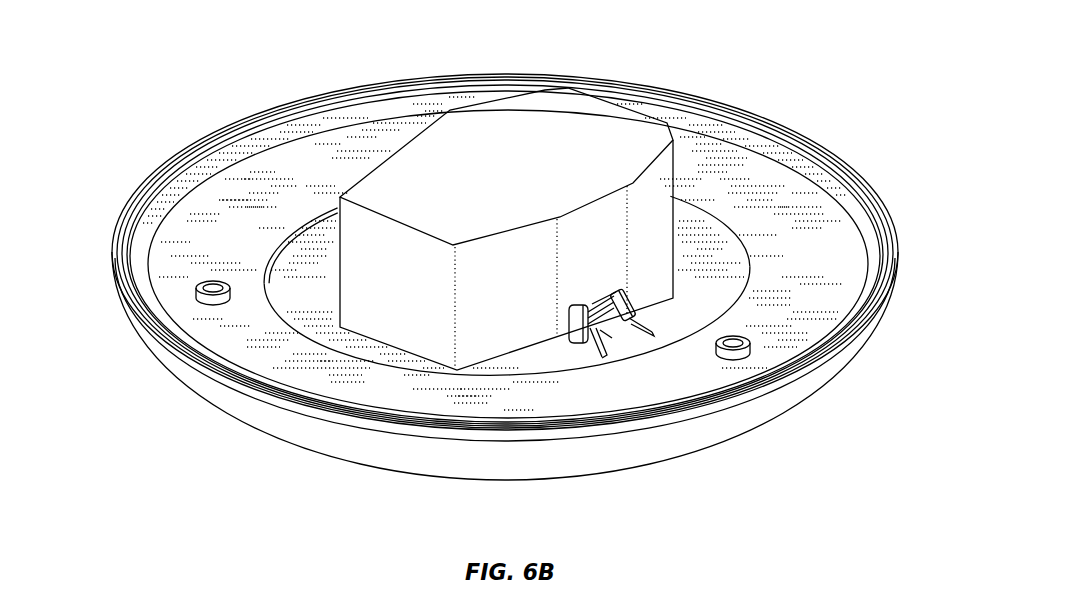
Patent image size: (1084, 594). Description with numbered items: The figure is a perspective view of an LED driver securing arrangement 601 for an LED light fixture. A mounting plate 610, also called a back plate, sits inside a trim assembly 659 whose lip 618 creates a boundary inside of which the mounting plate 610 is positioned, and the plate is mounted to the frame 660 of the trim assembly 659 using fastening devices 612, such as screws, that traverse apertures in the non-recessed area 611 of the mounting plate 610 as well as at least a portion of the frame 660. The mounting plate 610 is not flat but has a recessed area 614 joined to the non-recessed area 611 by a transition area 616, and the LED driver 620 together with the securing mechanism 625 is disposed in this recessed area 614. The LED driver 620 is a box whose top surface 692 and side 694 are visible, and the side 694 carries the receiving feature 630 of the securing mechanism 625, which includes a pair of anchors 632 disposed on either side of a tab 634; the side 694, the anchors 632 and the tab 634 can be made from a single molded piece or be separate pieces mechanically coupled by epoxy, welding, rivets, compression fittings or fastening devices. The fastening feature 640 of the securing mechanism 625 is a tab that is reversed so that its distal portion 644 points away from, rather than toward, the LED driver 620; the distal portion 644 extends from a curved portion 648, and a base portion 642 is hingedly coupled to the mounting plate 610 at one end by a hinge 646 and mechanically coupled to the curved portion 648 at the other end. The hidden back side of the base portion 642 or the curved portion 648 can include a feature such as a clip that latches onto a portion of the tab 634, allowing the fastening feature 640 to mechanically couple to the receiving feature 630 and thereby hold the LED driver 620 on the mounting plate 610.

The base assembly 601 is at (196, 66).
The mounting plate 610 is at (723, 157).
The non-recessed area 611 is at (833, 265).
The fastening devices 612 is at (215, 281).
The recessed area 614 is at (324, 303).
The transition area 616 is at (315, 206).
The lip 618 is at (155, 220).
The LED driver 620 is at (577, 110).
The securing mechanism 625 is at (549, 332).
The receiving feature 630 is at (604, 317).
The anchors 632 is at (568, 325).
The tab 634 is at (576, 308).
The fastening feature 640 is at (635, 347).
The connector body 642 is at (611, 336).
The distal portion 644 is at (597, 306).
The hinge 646 is at (592, 345).
The curved portion 648 is at (645, 326).
The trim assembly 659 is at (289, 455).
The frame 660 is at (365, 461).
The top surface 692 is at (524, 176).
The side 694 is at (412, 296).